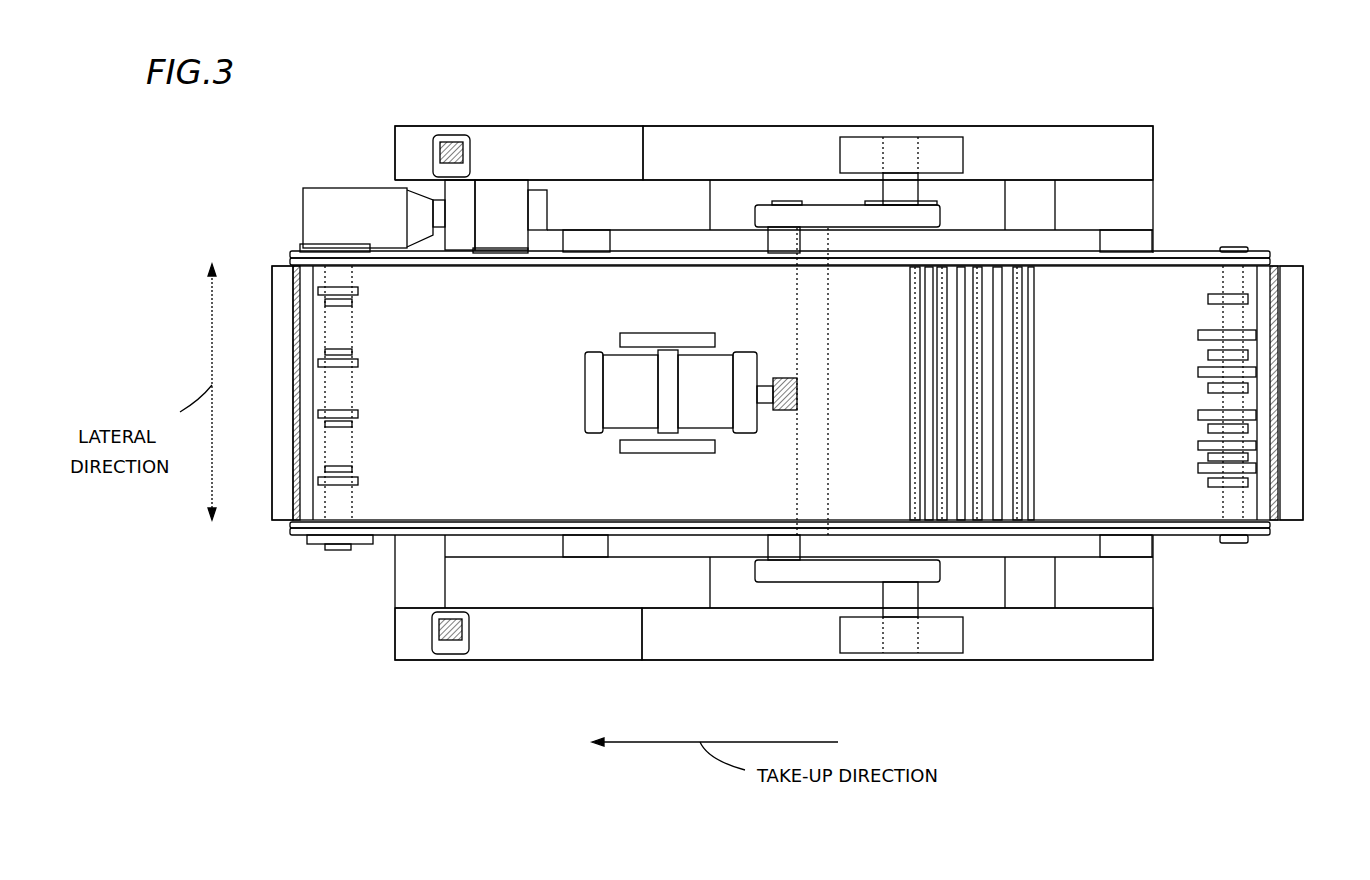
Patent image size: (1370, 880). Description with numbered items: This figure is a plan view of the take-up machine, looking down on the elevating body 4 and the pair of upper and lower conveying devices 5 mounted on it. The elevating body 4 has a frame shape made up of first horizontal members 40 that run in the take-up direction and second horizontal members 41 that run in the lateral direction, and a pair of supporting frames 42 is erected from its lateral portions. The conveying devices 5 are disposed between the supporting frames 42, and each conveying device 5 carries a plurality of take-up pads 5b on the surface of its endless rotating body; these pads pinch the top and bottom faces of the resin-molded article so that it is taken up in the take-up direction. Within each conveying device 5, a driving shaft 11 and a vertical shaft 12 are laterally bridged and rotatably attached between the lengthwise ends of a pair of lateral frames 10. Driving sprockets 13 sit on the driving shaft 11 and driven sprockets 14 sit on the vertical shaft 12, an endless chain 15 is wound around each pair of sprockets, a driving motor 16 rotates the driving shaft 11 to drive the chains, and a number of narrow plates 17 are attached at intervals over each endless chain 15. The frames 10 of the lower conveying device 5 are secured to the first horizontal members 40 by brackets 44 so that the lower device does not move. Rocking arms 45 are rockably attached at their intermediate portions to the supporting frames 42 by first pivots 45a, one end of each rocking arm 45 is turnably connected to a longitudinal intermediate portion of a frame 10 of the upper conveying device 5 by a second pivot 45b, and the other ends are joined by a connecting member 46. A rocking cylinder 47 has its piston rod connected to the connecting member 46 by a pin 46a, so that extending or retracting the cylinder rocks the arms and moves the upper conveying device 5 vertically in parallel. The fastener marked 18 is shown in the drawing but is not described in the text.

The elevating body 4 is at (1060, 126).
The conveying device 5 is at (1276, 252).
The take-up pad 5b is at (283, 268).
The lateral frame 10 is at (1040, 268).
The driving shaft 11 is at (355, 404).
The vertical shaft 12 is at (1210, 375).
The driving sprocket 13 is at (360, 300).
The driven sprocket 14 is at (1210, 305).
The endless chain 15 is at (293, 322).
The driving motor 16 is at (498, 180).
The narrow plate 17 is at (298, 450).
The screw 18 is at (452, 140).
The first horizontal member 40 is at (558, 150).
The second horizontal member 41 is at (400, 580).
The supporting frame 42 is at (670, 150).
The bracket 44 is at (600, 240).
The rocking arm 45 is at (815, 205).
The first pivot 45a is at (895, 137).
The second pivot 45b is at (775, 210).
The connecting member 46 is at (820, 370).
The pin 46a is at (782, 412).
The rocking cylinder 47 is at (722, 362).